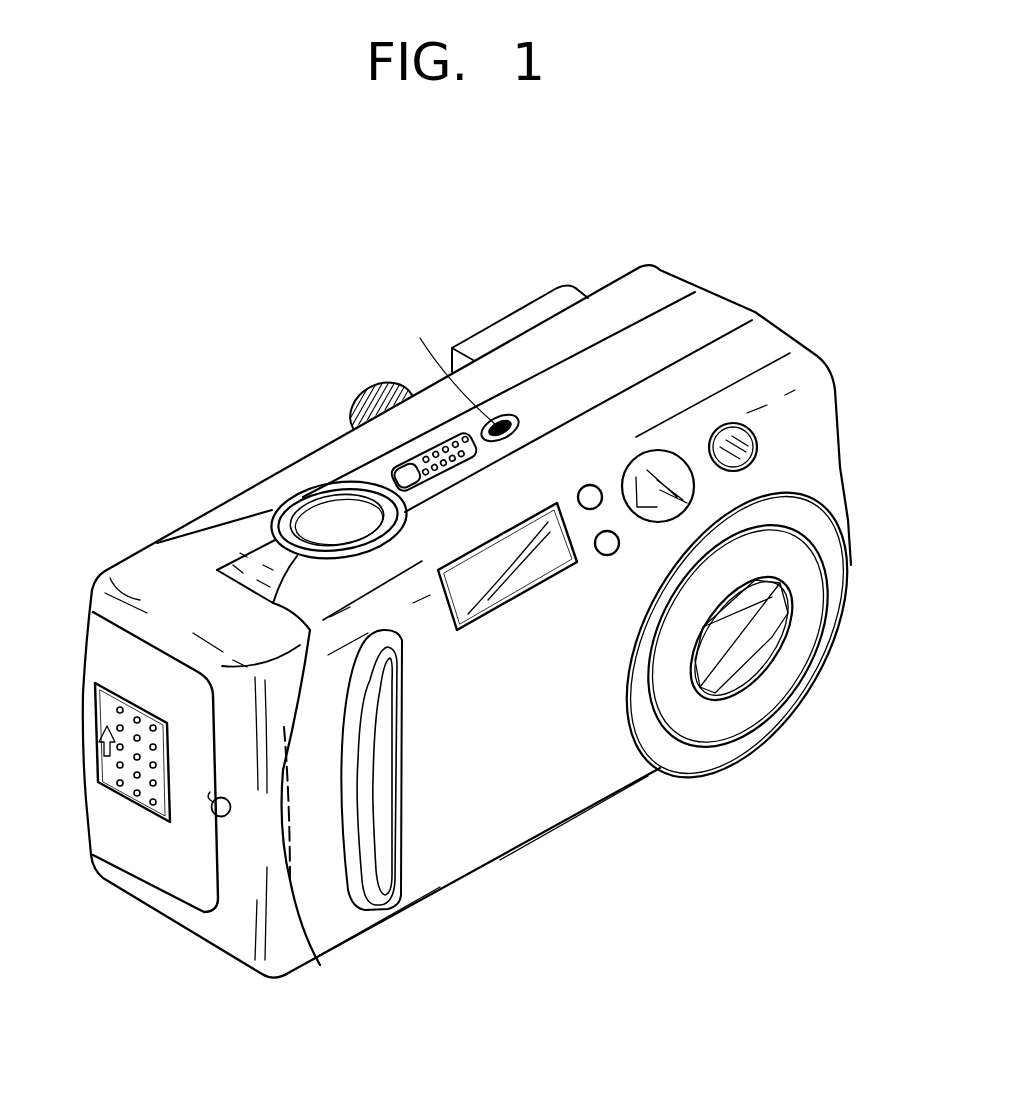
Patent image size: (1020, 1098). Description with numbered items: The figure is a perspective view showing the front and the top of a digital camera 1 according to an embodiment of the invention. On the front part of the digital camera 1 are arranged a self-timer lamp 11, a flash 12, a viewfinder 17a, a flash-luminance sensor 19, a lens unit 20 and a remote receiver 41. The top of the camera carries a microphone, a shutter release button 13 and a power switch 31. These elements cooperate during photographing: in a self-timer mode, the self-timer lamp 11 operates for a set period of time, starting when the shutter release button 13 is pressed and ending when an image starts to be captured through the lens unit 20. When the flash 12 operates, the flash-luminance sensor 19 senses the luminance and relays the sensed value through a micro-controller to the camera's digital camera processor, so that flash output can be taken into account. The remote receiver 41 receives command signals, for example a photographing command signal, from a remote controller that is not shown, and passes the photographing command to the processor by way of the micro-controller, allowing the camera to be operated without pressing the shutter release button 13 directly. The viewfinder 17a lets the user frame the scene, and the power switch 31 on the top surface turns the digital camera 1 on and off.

The digital camera 1 is at (131, 432).
The self-timer lamp 11 is at (730, 423).
The flash 12 is at (482, 577).
The shutter release button 13 is at (327, 510).
The viewfinder 17a is at (658, 450).
The flash-luminance sensor 19 is at (603, 498).
The lens unit 20 is at (742, 640).
The power switch 31 is at (385, 396).
The remote receiver 41 is at (620, 543).